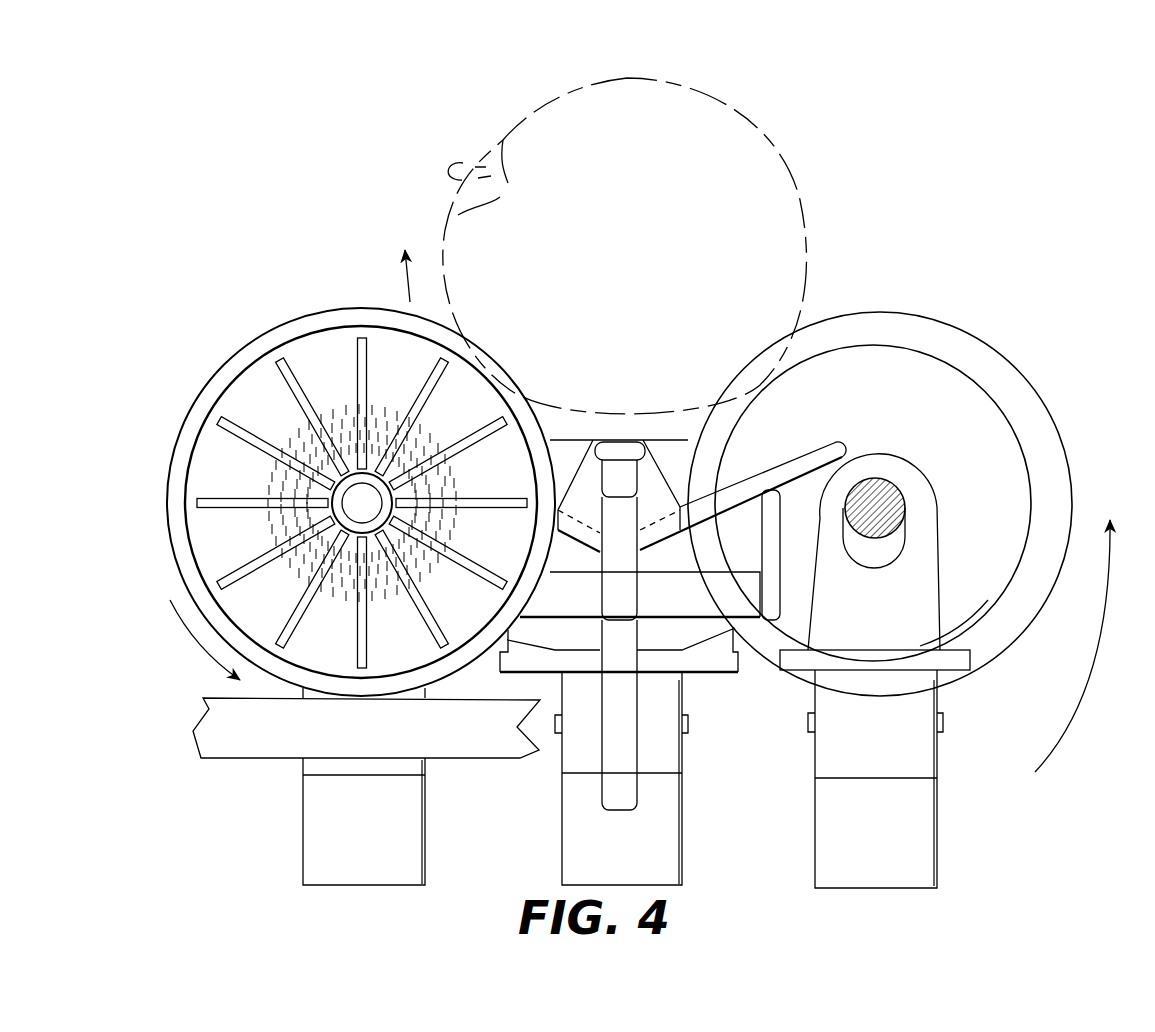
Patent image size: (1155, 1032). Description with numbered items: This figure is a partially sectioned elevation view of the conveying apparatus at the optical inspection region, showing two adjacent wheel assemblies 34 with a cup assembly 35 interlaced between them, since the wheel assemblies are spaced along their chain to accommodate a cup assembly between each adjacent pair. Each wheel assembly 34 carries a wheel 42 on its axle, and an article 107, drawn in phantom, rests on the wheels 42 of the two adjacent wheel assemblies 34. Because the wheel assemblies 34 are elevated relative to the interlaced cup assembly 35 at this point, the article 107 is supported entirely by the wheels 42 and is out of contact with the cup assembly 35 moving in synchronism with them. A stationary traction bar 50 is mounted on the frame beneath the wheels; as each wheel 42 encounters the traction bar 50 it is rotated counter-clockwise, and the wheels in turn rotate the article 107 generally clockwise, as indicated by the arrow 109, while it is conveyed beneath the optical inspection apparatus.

The wheel assembly 34 is at (605, 570).
The cup assembly 35 is at (627, 410).
The wheel 42 is at (363, 307).
The traction bar 50 is at (258, 752).
The article 107 is at (583, 80).
The arrow 109 is at (400, 277).